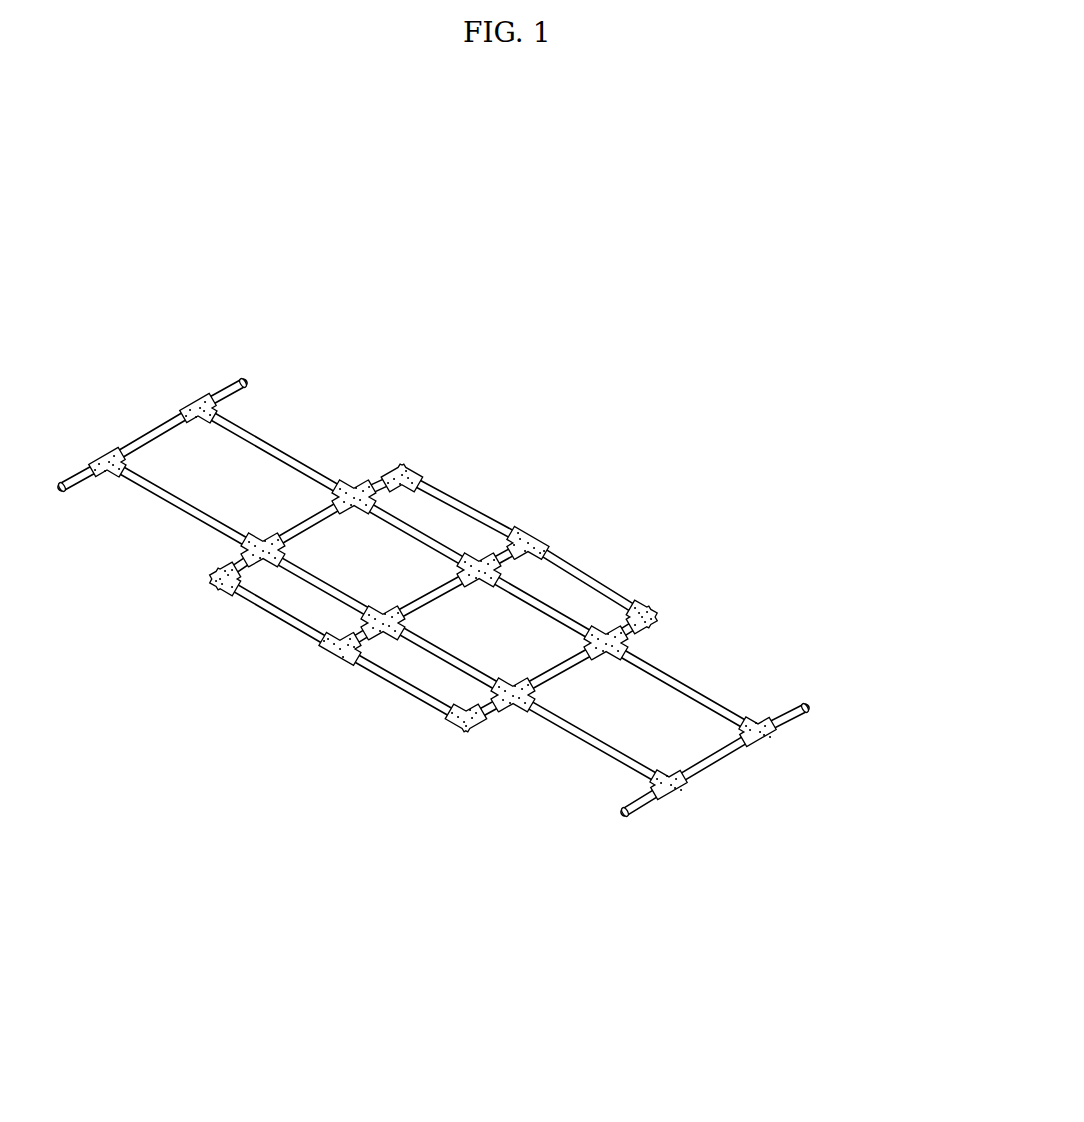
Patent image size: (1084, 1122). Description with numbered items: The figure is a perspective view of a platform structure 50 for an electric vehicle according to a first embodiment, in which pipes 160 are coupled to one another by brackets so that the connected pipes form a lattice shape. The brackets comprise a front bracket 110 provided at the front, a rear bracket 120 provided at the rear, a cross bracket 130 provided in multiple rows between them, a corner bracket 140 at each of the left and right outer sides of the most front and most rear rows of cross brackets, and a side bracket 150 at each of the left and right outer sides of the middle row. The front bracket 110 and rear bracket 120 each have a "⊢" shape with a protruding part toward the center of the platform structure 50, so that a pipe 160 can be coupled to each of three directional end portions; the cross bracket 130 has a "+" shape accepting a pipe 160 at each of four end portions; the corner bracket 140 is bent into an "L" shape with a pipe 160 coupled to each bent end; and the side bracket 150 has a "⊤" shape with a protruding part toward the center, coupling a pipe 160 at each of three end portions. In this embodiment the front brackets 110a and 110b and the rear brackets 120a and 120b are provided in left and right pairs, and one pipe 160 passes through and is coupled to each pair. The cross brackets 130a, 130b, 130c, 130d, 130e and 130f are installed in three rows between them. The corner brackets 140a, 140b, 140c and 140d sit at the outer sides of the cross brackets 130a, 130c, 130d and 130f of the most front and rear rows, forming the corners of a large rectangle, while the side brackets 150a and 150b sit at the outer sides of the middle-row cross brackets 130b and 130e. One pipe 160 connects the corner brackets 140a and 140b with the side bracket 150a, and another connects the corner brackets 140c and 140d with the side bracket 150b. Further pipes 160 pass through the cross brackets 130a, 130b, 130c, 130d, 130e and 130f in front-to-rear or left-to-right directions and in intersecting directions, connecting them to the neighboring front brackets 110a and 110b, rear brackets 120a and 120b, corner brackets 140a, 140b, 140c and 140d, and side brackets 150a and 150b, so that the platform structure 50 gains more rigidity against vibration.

The platform structure 50 is at (940, 262).
The front bracket 110 is at (774, 832).
The front bracket 110a is at (766, 750).
The front bracket 110b is at (680, 799).
The rear bracket 120 is at (478, 657).
The rear bracket 120a is at (205, 398).
The rear bracket 120b is at (108, 450).
The cross bracket 130 is at (552, 716).
The cross bracket 130a is at (603, 628).
The cross bracket 130b is at (468, 555).
The cross bracket 130c is at (350, 484).
The cross bracket 130d is at (513, 712).
The cross bracket 130e is at (388, 641).
The cross bracket 130f is at (268, 567).
The corner bracket 140 is at (522, 723).
The corner bracket 140a is at (656, 604).
The corner bracket 140b is at (410, 462).
The corner bracket 140c is at (460, 735).
The corner bracket 140d is at (212, 591).
The side bracket 150 is at (580, 776).
The side bracket 150a is at (526, 534).
The side bracket 150b is at (333, 664).
The pipe 160 is at (172, 515).